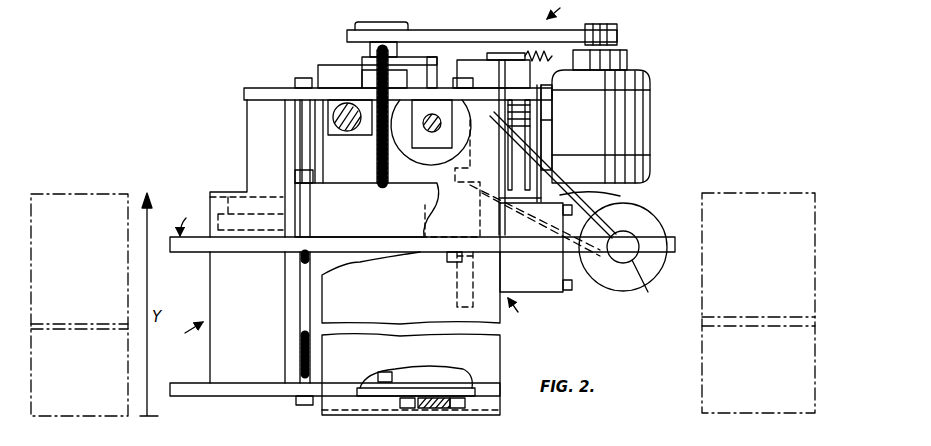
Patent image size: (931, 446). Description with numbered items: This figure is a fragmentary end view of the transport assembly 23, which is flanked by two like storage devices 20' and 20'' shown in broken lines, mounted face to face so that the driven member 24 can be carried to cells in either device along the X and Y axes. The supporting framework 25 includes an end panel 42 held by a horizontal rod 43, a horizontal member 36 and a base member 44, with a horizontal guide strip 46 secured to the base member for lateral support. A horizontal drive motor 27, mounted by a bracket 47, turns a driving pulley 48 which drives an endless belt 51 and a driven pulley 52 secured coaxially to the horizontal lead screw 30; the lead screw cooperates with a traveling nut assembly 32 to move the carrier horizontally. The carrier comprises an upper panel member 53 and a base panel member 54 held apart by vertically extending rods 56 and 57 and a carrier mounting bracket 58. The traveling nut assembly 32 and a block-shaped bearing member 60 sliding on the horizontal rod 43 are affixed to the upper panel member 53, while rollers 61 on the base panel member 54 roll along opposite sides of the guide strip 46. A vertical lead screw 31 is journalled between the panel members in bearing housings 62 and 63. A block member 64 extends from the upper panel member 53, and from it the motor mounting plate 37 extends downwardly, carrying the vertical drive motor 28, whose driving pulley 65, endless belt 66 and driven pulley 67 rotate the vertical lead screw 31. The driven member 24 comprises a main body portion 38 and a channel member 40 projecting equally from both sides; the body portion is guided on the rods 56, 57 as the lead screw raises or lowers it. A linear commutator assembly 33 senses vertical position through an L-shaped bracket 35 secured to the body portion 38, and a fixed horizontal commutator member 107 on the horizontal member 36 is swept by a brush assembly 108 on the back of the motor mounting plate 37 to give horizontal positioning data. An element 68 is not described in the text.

The storage device 20' is at (79, 305).
The storage device 20'' is at (758, 303).
The transport assembly 23 is at (564, 9).
The driven member 24 is at (179, 218).
The supporting framework 25 is at (430, 291).
The horizontal drive motor 27 is at (616, 282).
The vertical drive motor 28 is at (601, 116).
The horizontal lead screw 30 is at (428, 134).
The vertical lead screw 31 is at (388, 372).
The traveling nut assembly 32 is at (462, 178).
The linear commutator assembly 33 is at (186, 335).
The L-shaped bracket 35 is at (229, 197).
The horizontal member 36 is at (475, 212).
The motor mounting plate 37 is at (547, 186).
The main body portion 38 is at (367, 210).
The channel member 40 is at (198, 248).
The end panel 42 is at (500, 350).
The horizontal rod 43 is at (344, 134).
The base member 44 is at (378, 412).
The horizontal guide strip 46 is at (442, 410).
The bracket 47 is at (536, 247).
The driving pulley 48 is at (640, 285).
The endless belt 51 is at (630, 193).
The driven pulley 52 is at (426, 165).
The upper panel member 53 is at (260, 88).
The base panel member 54 is at (277, 396).
The vertically extending rod 56 is at (302, 290).
The vertically extending rod 57 is at (458, 290).
The carrier mounting bracket 58 is at (266, 241).
The bearing member 60 is at (377, 142).
The rollers 61 is at (412, 410).
The bearing housing 62 is at (364, 78).
The bearing housing 63 is at (395, 378).
The block member 64 is at (504, 69).
The driving pulley 65 is at (614, 32).
The endless belt 66 is at (483, 30).
The driven pulley 67 is at (352, 26).
The bracket 68 is at (450, 256).
The fixed horizontal commutator member 107 is at (500, 160).
The brush assembly 108 is at (522, 130).